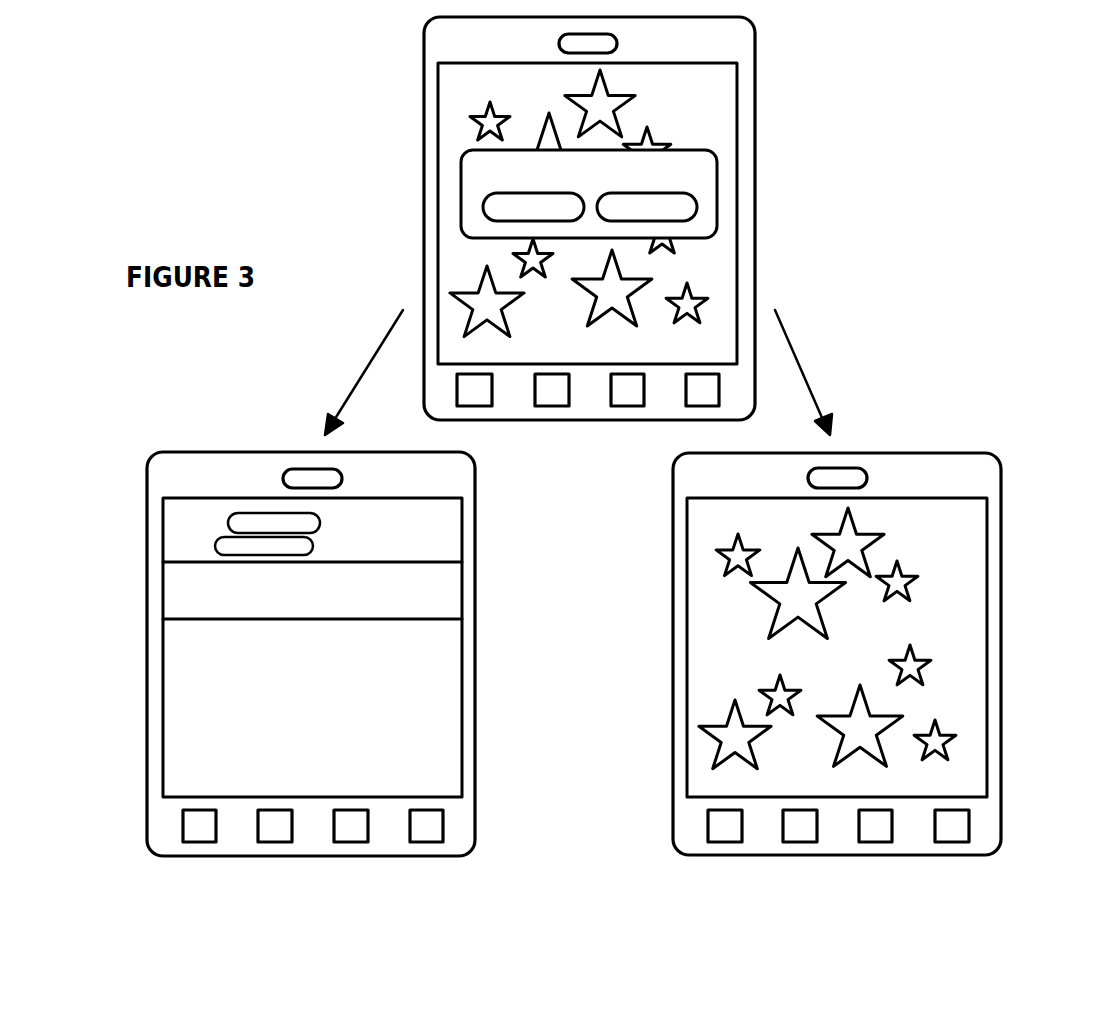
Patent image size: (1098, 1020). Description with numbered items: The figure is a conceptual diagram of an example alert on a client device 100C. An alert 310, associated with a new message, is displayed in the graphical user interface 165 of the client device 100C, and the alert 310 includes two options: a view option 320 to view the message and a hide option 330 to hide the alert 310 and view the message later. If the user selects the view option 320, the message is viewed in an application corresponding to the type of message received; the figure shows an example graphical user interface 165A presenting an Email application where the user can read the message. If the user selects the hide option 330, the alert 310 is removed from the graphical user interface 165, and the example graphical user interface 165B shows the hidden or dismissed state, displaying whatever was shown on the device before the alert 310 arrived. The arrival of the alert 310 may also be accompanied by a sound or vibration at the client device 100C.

The client device 100C is at (755, 262).
The graphical user interface 165 is at (738, 200).
The graphical user interface showing Email application 165A is at (463, 603).
The graphical user interface of hidden alert 165B is at (988, 600).
The alert 310 is at (461, 175).
The view option 320 is at (483, 207).
The hide option 330 is at (693, 215).